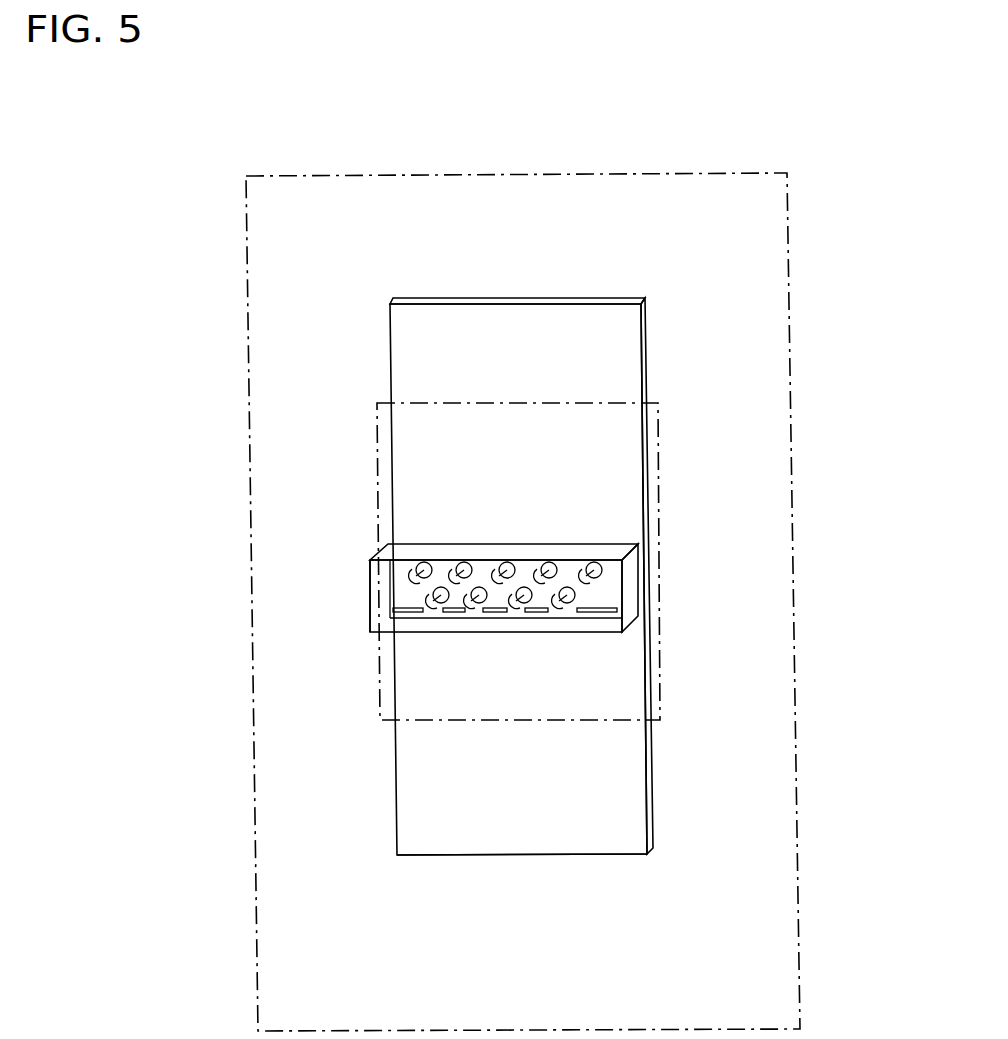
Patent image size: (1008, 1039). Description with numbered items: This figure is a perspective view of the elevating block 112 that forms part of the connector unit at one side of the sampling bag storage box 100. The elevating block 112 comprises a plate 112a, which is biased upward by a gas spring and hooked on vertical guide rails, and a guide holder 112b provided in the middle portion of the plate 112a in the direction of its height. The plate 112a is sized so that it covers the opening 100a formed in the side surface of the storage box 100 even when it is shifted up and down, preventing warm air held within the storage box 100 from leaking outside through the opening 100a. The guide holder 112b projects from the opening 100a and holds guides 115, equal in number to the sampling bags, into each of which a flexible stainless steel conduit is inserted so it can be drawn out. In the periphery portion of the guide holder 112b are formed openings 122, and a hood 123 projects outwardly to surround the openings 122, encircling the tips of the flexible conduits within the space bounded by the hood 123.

The sampling bag storage box 100 is at (738, 315).
The opening 100a is at (658, 510).
The elevating block 112 is at (553, 328).
The plate 112a is at (415, 787).
The guide holder 112b is at (398, 573).
The guide 115 is at (480, 597).
The opening 122 is at (578, 613).
The hood 123 is at (632, 588).